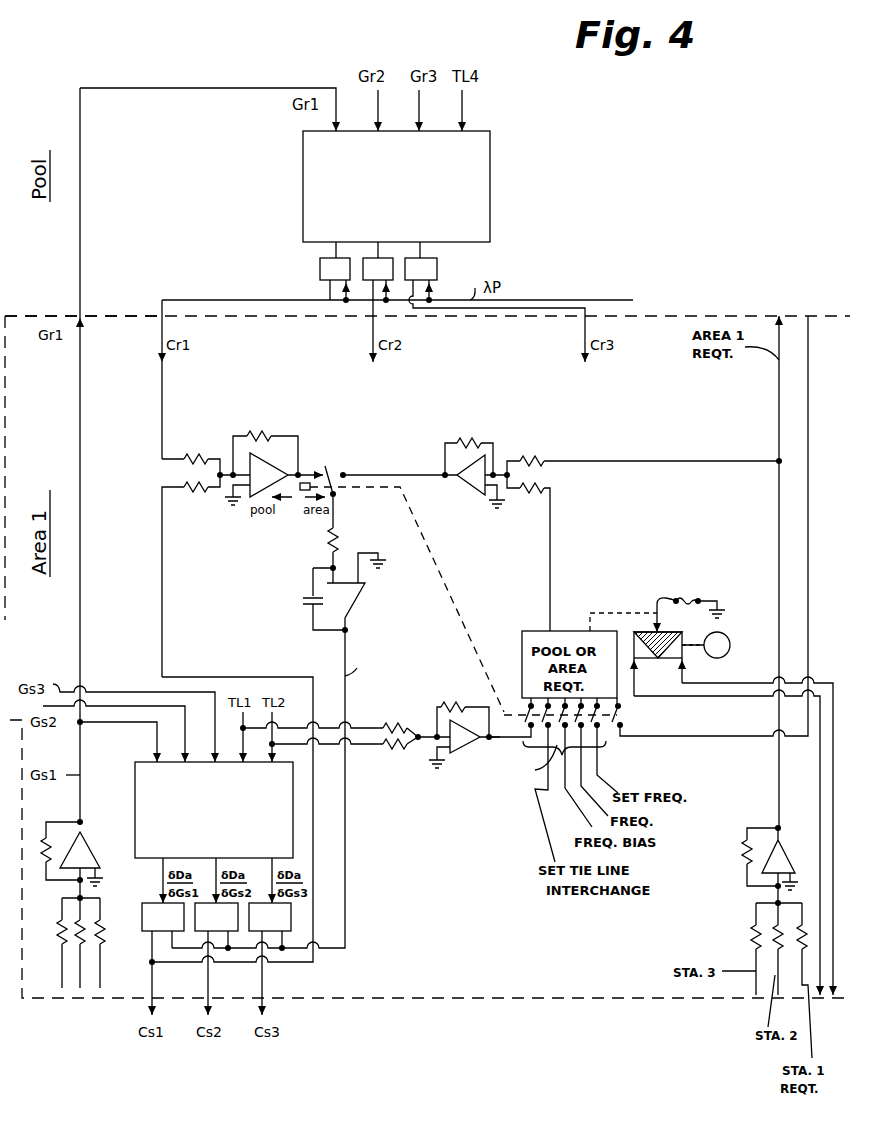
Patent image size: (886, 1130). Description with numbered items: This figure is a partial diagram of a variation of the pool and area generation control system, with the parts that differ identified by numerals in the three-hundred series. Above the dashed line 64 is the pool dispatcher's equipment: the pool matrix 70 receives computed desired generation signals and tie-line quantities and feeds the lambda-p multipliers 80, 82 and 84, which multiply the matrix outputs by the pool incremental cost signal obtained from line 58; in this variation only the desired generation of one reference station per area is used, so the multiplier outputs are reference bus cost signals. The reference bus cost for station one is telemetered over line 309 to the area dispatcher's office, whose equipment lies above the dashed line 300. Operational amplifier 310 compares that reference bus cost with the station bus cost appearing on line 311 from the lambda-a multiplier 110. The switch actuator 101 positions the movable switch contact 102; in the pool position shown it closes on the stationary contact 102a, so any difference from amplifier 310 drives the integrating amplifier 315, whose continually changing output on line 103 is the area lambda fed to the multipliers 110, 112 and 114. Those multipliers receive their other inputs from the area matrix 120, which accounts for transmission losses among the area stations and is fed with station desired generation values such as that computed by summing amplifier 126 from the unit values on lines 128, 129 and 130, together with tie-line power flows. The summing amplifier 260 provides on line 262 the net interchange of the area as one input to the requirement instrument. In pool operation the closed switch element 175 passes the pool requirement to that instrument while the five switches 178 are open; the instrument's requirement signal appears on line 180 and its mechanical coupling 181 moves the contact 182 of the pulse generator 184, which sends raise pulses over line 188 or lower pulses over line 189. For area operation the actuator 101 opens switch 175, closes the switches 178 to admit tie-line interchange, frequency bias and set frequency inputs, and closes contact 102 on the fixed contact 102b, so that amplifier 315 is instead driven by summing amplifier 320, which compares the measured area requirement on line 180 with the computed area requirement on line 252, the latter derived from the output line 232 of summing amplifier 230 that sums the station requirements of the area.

The pool matrix 70 is at (490, 197).
The lambda-p multiplier 80 is at (335, 272).
The lambda-p multiplier 82 is at (378, 302).
The lambda-p multiplier 84 is at (497, 302).
The lambda-p line 58 is at (540, 300).
The dashed line 64 is at (135, 312).
The telemetering line 309 is at (162, 387).
The operational amplifier 310 is at (245, 470).
The switch actuator 101 is at (303, 483).
The stationary contact 102a is at (324, 470).
The movable switch contact 102 is at (331, 470).
The fixed contact 102b is at (347, 474).
The computed area requirement line 252 is at (591, 448).
The summing amplifier 320 is at (468, 487).
The measured area requirement line 180 is at (552, 510).
The integrating amplifier 315 is at (355, 598).
The mechanical coupling 181 is at (598, 612).
The contact 182 is at (674, 599).
The pulse generator 184 is at (672, 690).
The lower pulse line 189 is at (755, 677).
The switch element 175 is at (621, 707).
The raise pulse line 188 is at (714, 526).
The area matrix 120 is at (145, 783).
The station bus cost line 311 is at (318, 785).
The lambda-a1 line 103 is at (347, 812).
The summing amplifier 260 is at (461, 747).
The net interchange line 262 is at (497, 742).
The switches 178 is at (527, 765).
The area requirement output line 232 is at (778, 772).
The summing amplifier 230 is at (772, 852).
The summing amplifier 126 is at (85, 857).
The input line 128 is at (118, 974).
The input line 129 is at (85, 978).
The input line 130 is at (60, 975).
The lambda-a1 multiplier 110 is at (163, 959).
The lambda-a1 multiplier 112 is at (216, 959).
The lambda-a1 multiplier 114 is at (270, 959).
The dashed line 300 is at (440, 998).